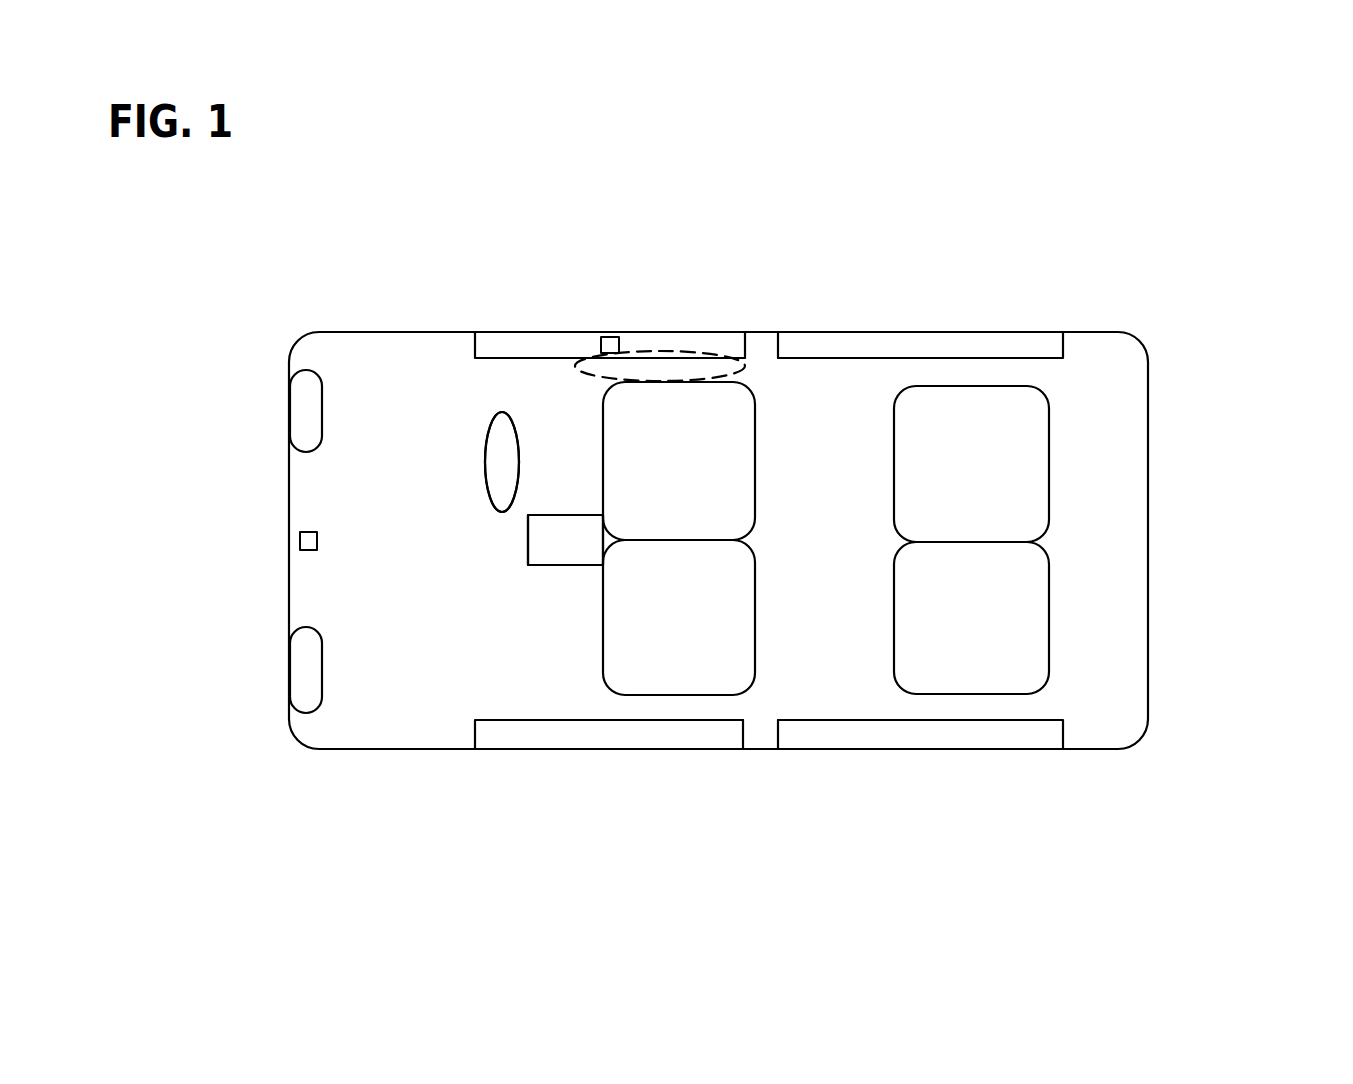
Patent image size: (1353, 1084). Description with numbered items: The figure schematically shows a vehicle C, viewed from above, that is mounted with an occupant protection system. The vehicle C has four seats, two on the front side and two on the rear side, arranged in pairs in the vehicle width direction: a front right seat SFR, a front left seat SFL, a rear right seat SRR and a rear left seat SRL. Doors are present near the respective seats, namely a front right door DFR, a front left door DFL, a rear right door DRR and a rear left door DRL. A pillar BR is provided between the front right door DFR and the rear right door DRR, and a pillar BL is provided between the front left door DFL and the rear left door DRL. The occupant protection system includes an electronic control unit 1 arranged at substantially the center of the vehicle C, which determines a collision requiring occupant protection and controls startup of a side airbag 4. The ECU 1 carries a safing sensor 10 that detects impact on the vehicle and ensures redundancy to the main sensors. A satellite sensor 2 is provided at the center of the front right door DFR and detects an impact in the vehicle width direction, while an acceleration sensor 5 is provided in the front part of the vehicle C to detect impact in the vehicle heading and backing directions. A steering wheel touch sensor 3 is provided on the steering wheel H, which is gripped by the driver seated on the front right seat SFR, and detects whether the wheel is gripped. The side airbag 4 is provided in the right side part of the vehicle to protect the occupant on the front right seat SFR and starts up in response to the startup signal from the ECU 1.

The vehicle C is at (1196, 290).
The electronic control unit 1 is at (545, 545).
The safing sensor 10 is at (560, 602).
The satellite sensor 2 is at (619, 345).
The steering wheel touch sensor 3 is at (474, 455).
The steering wheel H is at (492, 452).
The side airbag 4 is at (680, 366).
The acceleration sensor 5 is at (306, 540).
The front right door DFR is at (542, 344).
The front left door DFL is at (610, 737).
The rear right door DRR is at (972, 347).
The rear left door DRL is at (978, 740).
The pillar BR is at (768, 350).
The pillar BL is at (765, 740).
The front right seat SFR is at (735, 490).
The front left seat SFL is at (735, 643).
The rear right seat SRR is at (1017, 487).
The rear left seat SRL is at (1021, 645).